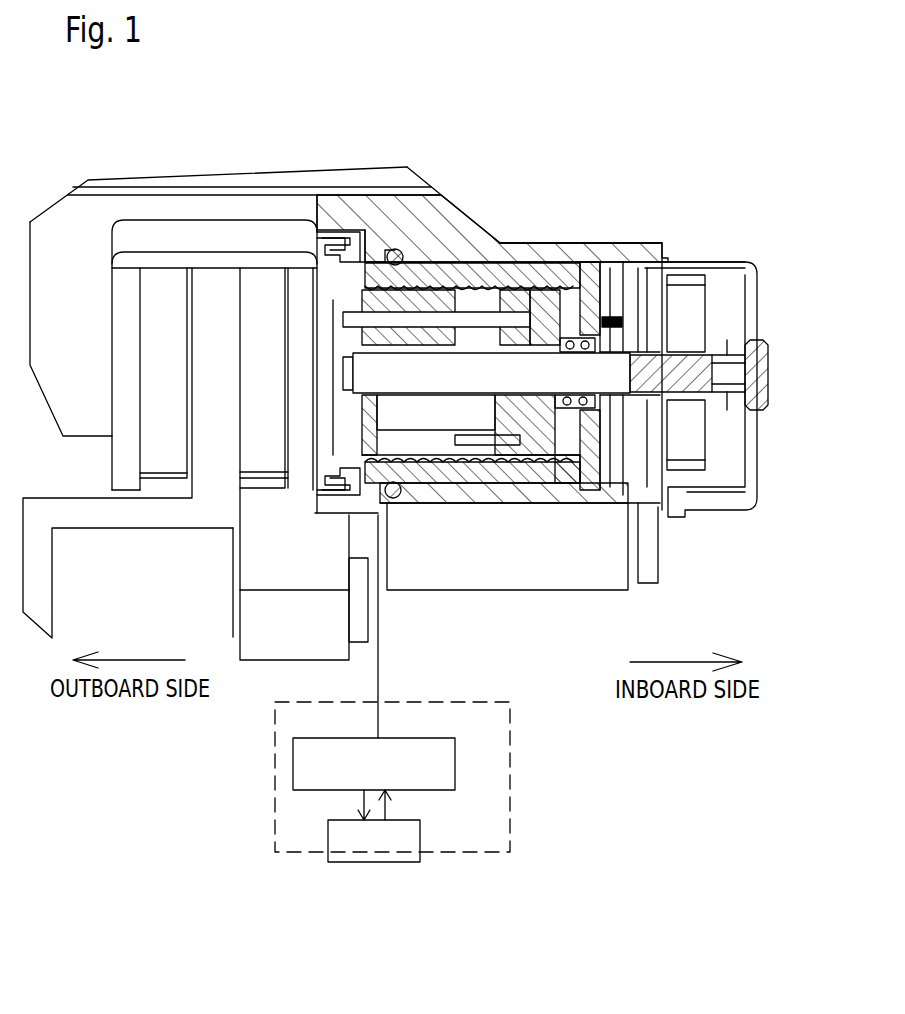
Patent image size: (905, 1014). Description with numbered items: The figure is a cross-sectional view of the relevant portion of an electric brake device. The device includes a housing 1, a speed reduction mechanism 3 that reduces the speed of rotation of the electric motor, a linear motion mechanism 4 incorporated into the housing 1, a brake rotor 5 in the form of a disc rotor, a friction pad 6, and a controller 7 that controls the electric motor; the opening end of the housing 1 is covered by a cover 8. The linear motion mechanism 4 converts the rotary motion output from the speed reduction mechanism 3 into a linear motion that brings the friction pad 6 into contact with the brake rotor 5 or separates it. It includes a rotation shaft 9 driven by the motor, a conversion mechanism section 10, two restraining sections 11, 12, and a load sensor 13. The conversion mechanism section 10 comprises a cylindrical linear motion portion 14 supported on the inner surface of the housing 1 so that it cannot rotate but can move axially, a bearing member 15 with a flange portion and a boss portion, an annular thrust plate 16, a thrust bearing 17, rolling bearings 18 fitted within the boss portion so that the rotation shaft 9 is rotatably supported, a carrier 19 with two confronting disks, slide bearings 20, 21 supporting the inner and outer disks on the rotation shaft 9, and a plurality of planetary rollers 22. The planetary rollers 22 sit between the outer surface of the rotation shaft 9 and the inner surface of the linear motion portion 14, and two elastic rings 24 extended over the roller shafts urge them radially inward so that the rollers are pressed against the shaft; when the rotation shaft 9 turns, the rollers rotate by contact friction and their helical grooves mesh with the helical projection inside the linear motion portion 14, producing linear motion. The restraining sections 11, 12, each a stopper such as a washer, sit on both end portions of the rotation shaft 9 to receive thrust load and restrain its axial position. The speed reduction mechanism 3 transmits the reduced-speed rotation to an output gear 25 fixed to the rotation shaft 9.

The housing 1 is at (400, 207).
The speed reduction mechanism 3 is at (693, 265).
The linear motion mechanism 4 is at (473, 243).
The brake rotor 5 is at (205, 495).
The friction pad 6 is at (160, 462).
The controller 7 is at (510, 725).
The cover 8 is at (750, 275).
The rotation shaft 9 is at (537, 365).
The conversion mechanism section 10 is at (492, 272).
The restraining section 11 is at (335, 330).
The restraining section 12 is at (712, 352).
The load sensor 13 is at (613, 270).
The linear motion portion 14 is at (443, 475).
The bearing member 15 is at (594, 300).
The annular thrust plate 16 is at (590, 280).
The thrust bearing 17 is at (568, 478).
The rolling bearings 18 is at (587, 405).
The carrier 19 is at (400, 443).
The slide bearing 20 is at (500, 460).
The slide bearing 21 is at (360, 268).
The planetary rollers 22 is at (427, 275).
The elastic rings 24 is at (522, 290).
The output gear 25 is at (693, 451).